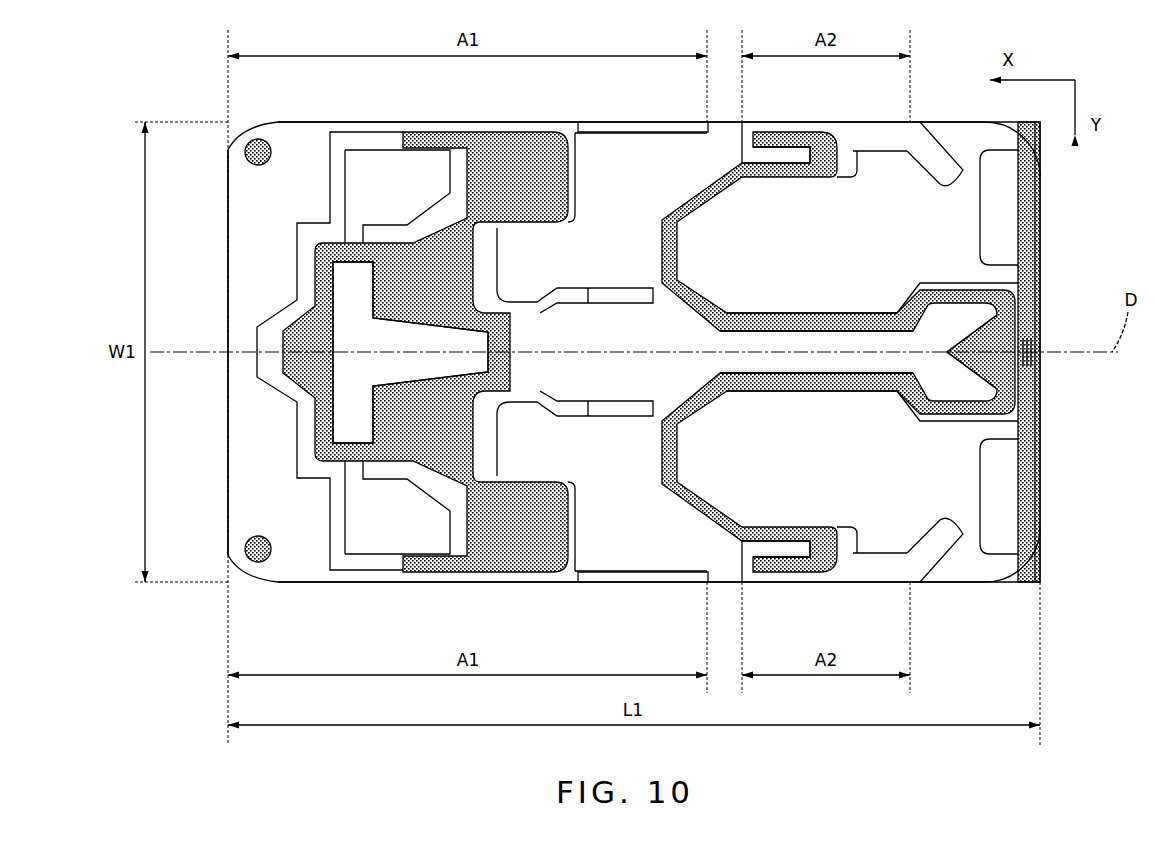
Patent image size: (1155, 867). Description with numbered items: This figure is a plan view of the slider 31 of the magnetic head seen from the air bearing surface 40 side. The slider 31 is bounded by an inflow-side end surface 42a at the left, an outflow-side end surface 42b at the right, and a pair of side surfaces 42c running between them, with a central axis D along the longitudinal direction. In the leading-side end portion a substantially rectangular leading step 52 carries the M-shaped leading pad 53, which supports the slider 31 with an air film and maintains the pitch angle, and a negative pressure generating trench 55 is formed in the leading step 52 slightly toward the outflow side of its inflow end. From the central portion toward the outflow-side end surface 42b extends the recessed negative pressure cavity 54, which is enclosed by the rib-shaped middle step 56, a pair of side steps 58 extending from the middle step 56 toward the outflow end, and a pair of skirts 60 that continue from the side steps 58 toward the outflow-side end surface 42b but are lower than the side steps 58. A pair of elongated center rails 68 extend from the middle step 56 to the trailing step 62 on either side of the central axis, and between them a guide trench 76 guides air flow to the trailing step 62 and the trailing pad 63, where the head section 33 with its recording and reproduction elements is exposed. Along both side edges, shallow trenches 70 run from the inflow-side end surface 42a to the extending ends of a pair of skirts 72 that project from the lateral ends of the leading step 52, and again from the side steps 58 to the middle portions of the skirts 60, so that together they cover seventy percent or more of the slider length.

The slider 31 is at (960, 590).
The head section 33 is at (1036, 332).
The air bearing surface 40 is at (526, 136).
The inflow-side end surface 42a is at (228, 240).
The outflow-side end surface 42b is at (1041, 460).
The side surfaces 42c is at (476, 131).
The leading step 52 is at (329, 131).
The leading pad 53 is at (493, 573).
The negative pressure cavity 54 is at (863, 212).
The negative pressure generating trench 55 is at (307, 446).
The middle step 56 is at (702, 200).
The side steps 58 is at (778, 132).
The skirts 60 is at (935, 161).
The trailing step 62 is at (978, 388).
The trailing pad 63 is at (1018, 371).
The center rails 68 is at (803, 312).
The shallow trenches 70 is at (430, 131).
The skirts 72 is at (612, 133).
The guide trench 76 is at (755, 363).